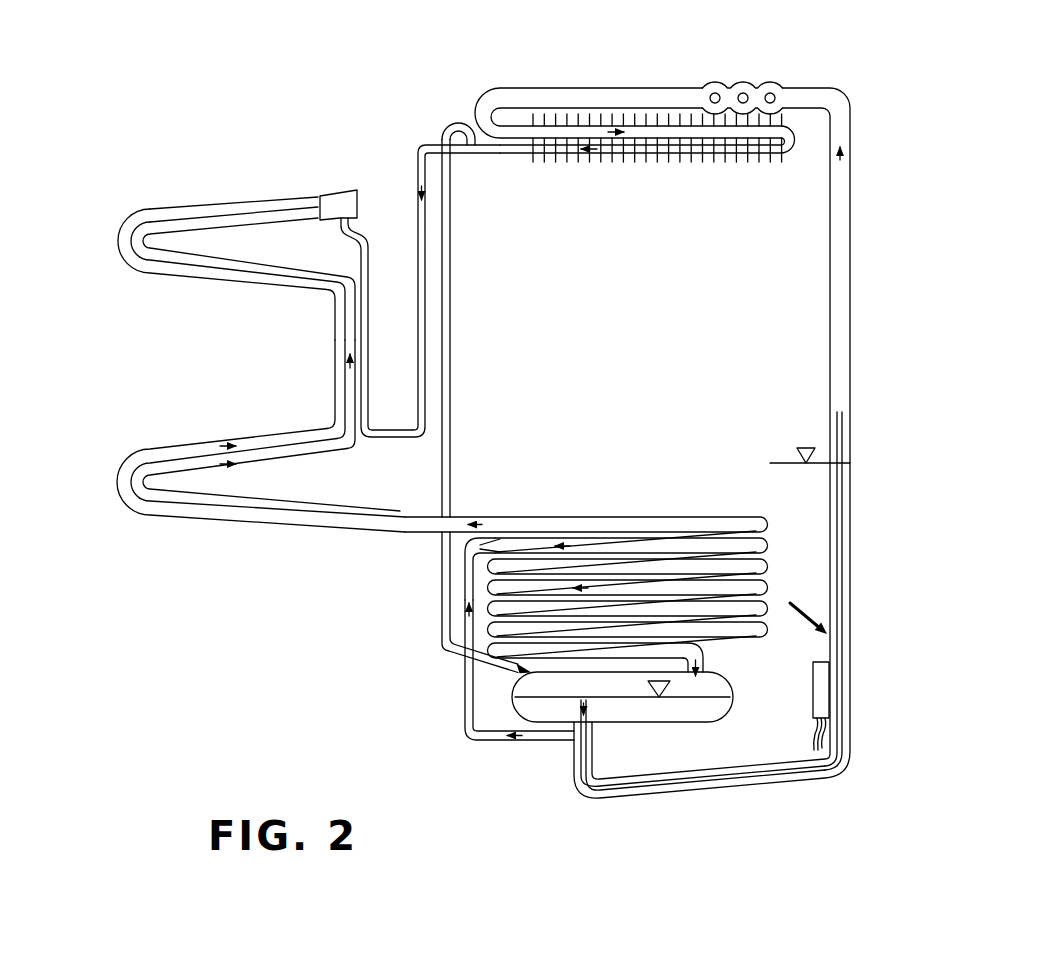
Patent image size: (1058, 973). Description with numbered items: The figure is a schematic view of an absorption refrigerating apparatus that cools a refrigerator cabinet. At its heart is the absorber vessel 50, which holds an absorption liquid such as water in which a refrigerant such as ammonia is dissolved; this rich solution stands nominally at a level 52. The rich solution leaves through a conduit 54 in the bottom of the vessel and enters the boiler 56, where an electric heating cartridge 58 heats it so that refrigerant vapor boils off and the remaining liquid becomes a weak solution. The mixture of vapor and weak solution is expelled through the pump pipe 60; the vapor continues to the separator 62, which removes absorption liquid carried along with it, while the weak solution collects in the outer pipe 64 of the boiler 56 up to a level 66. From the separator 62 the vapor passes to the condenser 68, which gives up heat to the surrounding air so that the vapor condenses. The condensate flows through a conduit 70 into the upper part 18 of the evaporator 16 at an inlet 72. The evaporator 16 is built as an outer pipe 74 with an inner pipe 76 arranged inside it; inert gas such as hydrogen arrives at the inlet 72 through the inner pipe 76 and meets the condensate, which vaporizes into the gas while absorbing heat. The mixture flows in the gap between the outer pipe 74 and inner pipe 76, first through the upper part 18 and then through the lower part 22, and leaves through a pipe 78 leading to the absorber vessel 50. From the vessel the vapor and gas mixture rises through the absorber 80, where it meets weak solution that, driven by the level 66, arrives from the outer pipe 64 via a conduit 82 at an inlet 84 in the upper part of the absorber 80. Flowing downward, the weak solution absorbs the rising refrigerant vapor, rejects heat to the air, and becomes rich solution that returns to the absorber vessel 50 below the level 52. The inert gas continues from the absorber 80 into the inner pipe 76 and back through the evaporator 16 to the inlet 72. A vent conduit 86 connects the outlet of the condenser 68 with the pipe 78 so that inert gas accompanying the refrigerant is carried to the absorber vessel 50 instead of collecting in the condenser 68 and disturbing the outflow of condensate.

The evaporator 16 is at (254, 312).
The upper part of the evaporator 18 is at (120, 243).
The lower part of the evaporator 22 is at (117, 486).
The absorber vessel 50 is at (732, 706).
The level of rich solution 52 is at (712, 684).
The conduit 54 is at (588, 757).
The boiler 56 is at (799, 606).
The electric heating cartridge 58 is at (829, 690).
The pump pipe 60 is at (851, 432).
The separator 62 is at (771, 88).
The outer pipe of the boiler 64 is at (851, 497).
The level of weak solution 66 is at (785, 463).
The condenser 68 is at (660, 172).
The conduit 70 is at (425, 417).
The inlet 72 is at (345, 205).
The outer pipe 74 is at (181, 207).
The inner pipe 76 is at (268, 212).
The pipe 78 is at (443, 579).
The absorber 80 is at (768, 567).
The conduit 82 is at (540, 741).
The inlet 84 is at (500, 547).
The vent conduit 86 is at (452, 195).